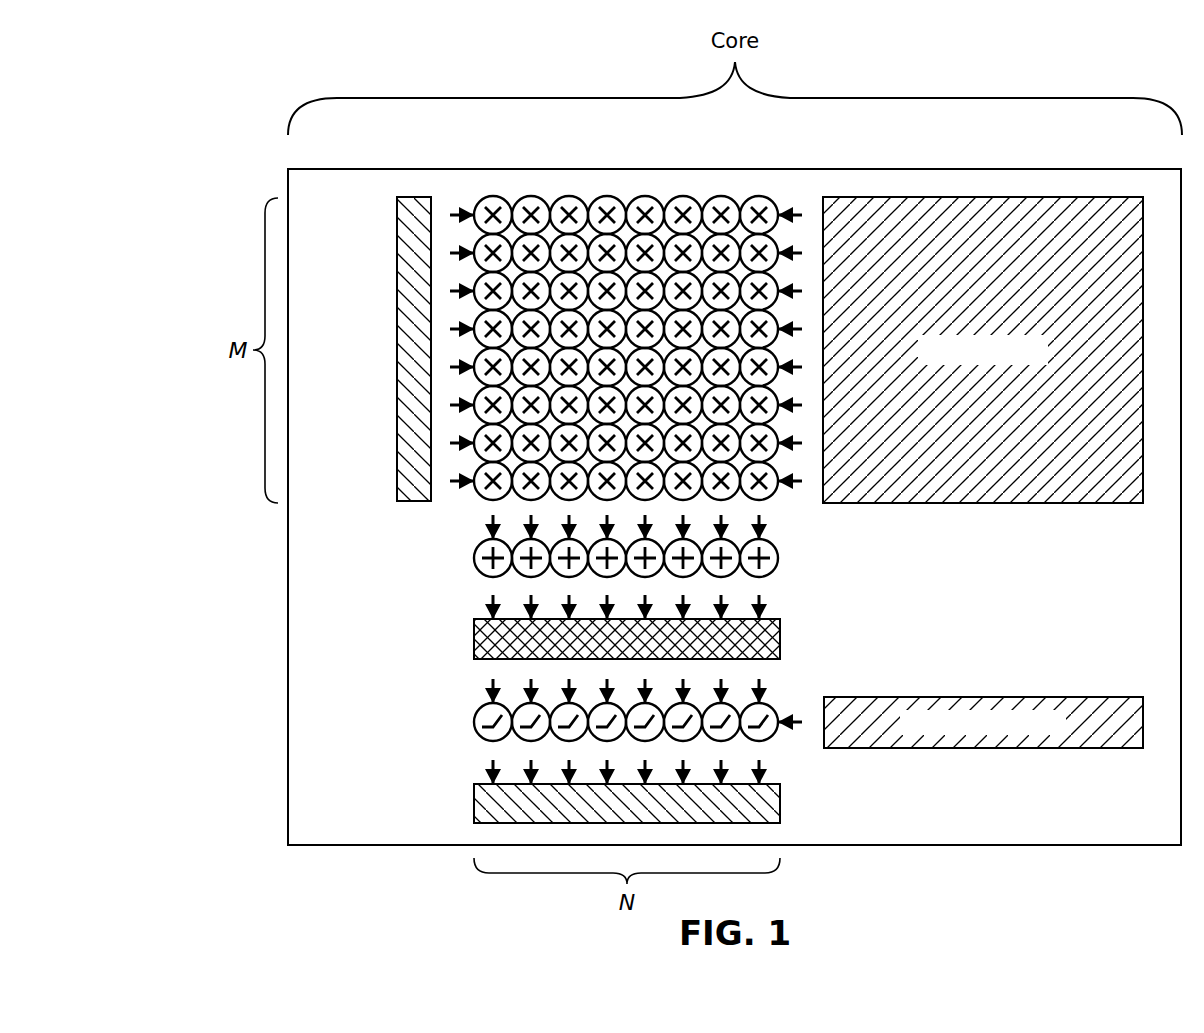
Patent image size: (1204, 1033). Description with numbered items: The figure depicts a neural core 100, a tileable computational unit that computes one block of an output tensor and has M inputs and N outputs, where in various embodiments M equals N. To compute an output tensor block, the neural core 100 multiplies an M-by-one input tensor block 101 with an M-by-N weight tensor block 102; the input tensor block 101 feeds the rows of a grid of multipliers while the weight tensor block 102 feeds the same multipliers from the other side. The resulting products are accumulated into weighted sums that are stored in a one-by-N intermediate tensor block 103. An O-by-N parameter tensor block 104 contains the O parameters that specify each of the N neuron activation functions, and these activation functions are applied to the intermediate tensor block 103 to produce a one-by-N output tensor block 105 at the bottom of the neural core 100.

The neural core 100 is at (226, 143).
The input tensor block 101 is at (414, 197).
The weight tensor block 102 is at (983, 197).
The intermediate tensor block 103 is at (782, 640).
The parameter tensor block 104 is at (983, 697).
The output tensor block 105 is at (782, 803).